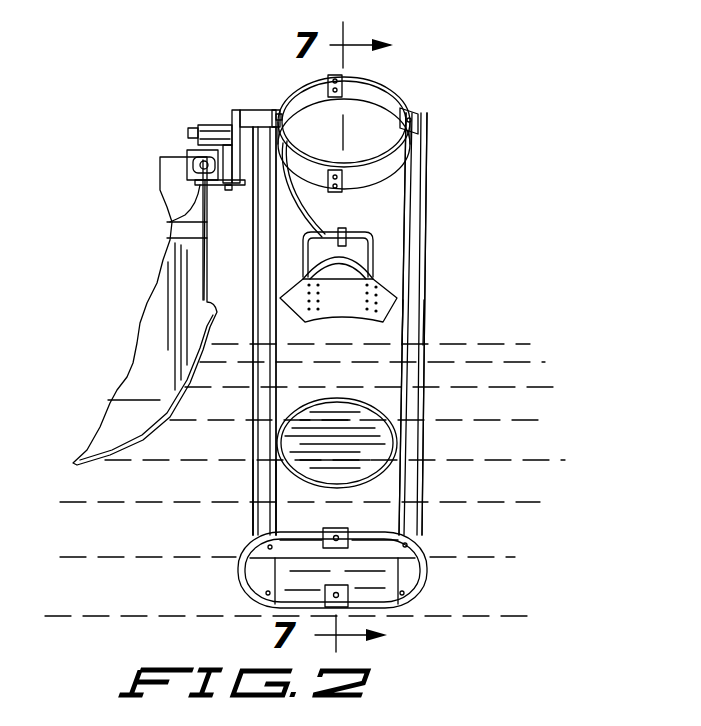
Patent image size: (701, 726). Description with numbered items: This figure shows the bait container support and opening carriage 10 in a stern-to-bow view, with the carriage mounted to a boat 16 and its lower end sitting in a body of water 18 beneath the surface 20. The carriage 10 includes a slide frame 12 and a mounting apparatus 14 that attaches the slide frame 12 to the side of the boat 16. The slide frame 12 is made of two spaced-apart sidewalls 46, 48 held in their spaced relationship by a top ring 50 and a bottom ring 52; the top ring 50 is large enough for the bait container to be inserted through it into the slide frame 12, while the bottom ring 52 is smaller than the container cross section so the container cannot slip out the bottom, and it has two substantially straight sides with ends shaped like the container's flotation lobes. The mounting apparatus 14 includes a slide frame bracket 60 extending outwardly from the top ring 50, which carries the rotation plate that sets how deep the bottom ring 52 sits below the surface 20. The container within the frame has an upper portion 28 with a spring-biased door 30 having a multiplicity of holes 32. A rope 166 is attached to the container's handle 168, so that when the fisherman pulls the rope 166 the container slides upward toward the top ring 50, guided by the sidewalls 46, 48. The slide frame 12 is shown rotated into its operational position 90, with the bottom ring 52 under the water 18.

The bait container support and opening carriage 10 is at (538, 89).
The slide frame 12 is at (440, 156).
The mounting apparatus 14 is at (200, 120).
The boat 16 is at (197, 288).
The body of water 18 is at (513, 494).
The surface 20 is at (548, 344).
The upper portion 28 is at (415, 321).
The door 30 is at (350, 306).
The holes 32 is at (365, 283).
The sidewall 46 is at (430, 180).
The sidewall 48 is at (250, 428).
The top ring 50 is at (380, 75).
The bottom ring 52 is at (420, 553).
The slide frame bracket 60 is at (258, 108).
The operational position 90 is at (242, 513).
The rope 166 is at (323, 205).
The handle 168 is at (338, 246).